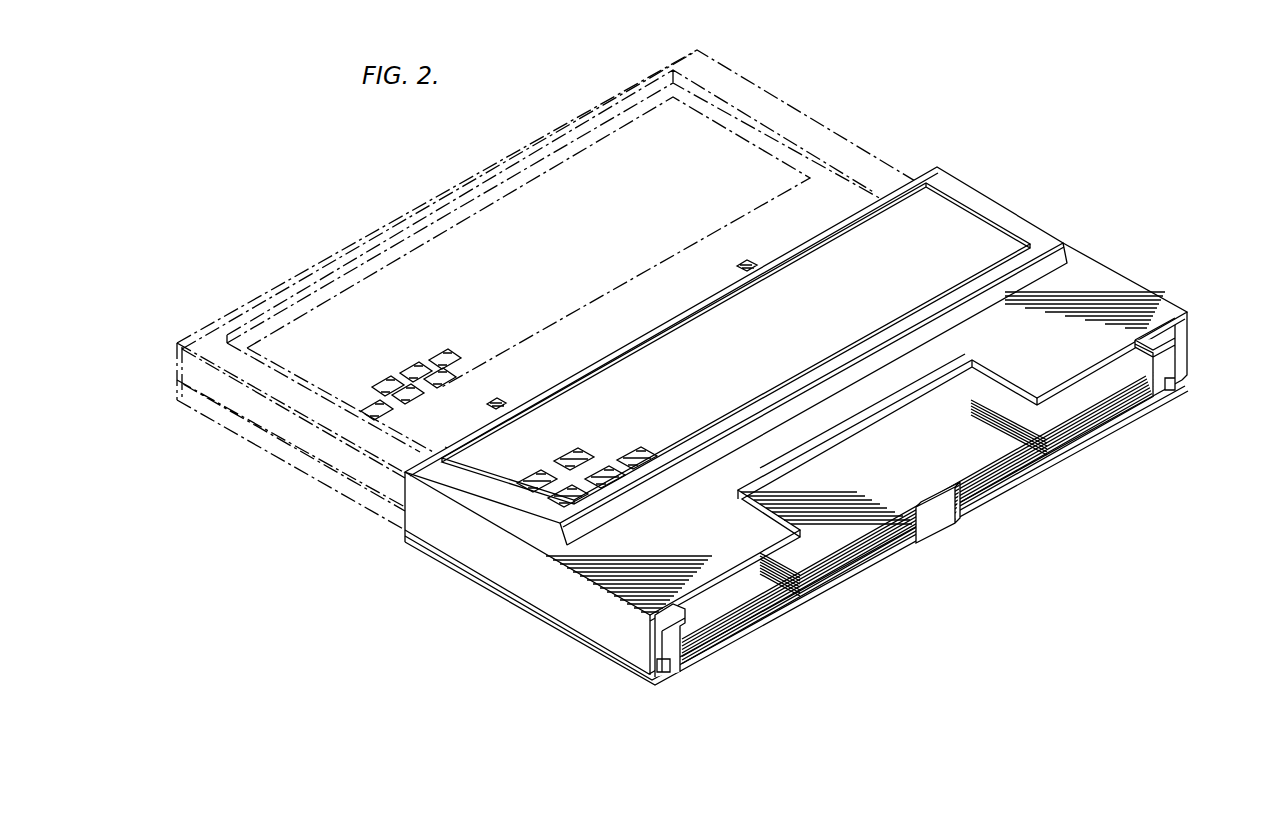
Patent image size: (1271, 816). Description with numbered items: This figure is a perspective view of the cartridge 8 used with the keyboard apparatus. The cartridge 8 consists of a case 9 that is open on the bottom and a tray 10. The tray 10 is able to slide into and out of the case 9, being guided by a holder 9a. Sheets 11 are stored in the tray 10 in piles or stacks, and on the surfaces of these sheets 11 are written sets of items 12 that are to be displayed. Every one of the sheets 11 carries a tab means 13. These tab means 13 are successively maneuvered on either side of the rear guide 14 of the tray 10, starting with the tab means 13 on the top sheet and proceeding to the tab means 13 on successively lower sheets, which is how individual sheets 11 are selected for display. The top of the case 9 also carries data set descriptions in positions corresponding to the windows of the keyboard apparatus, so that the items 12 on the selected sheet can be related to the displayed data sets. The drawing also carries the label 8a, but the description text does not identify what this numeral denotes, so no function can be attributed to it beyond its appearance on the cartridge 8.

The cartridge 8 is at (1008, 198).
The lid contact pads 8a is at (565, 500).
The case 9 is at (1113, 285).
The holder 9a is at (657, 668).
The tray 10 is at (1012, 482).
The sheets 11 is at (848, 523).
The sets of items 12 is at (372, 404).
The tab means 13 is at (845, 558).
The rear guide 14 is at (937, 519).